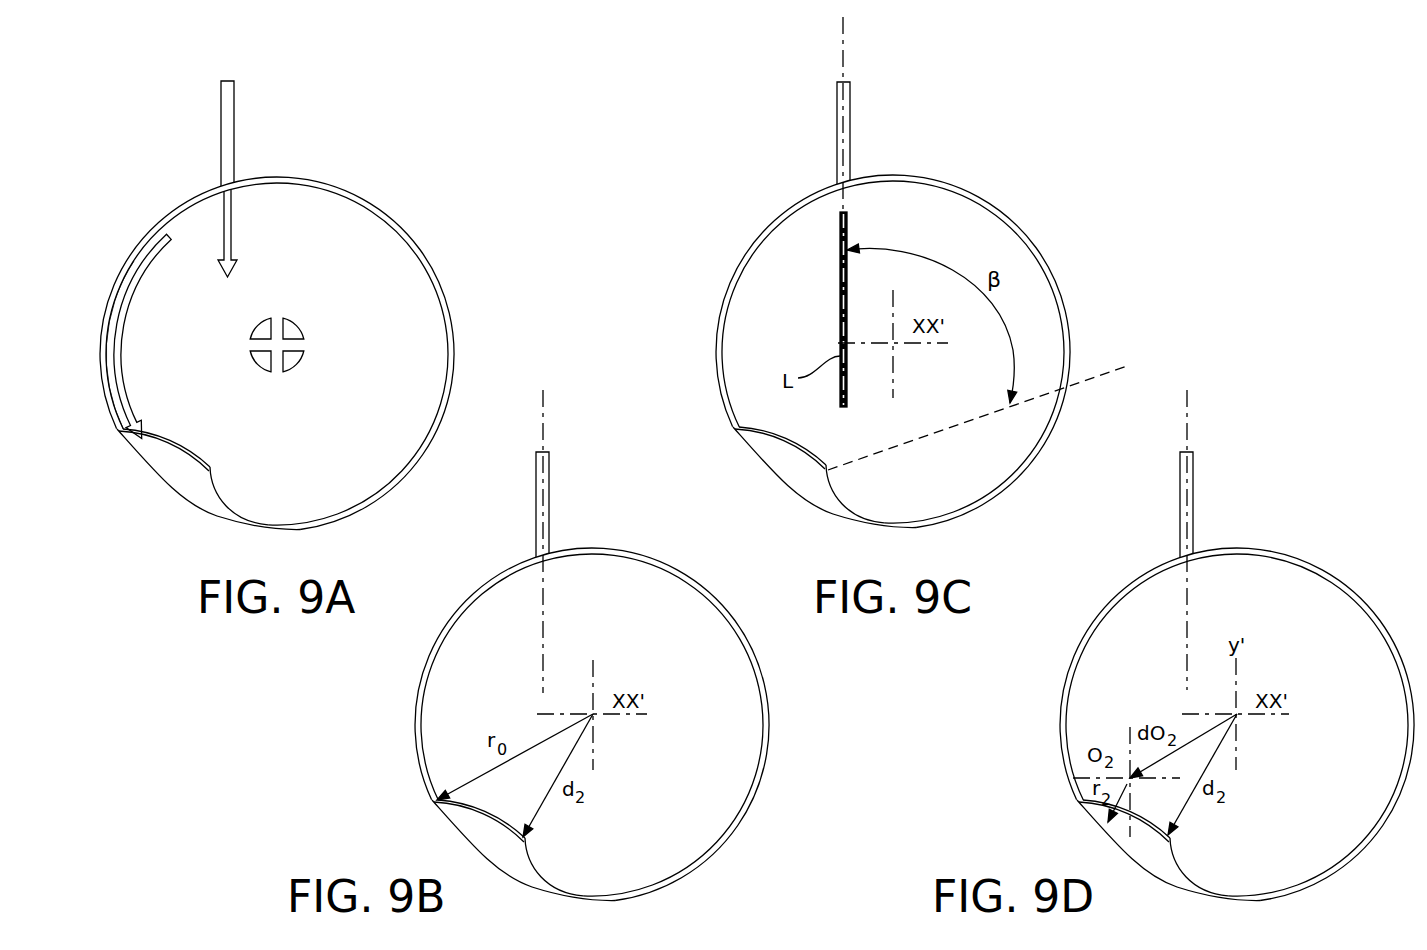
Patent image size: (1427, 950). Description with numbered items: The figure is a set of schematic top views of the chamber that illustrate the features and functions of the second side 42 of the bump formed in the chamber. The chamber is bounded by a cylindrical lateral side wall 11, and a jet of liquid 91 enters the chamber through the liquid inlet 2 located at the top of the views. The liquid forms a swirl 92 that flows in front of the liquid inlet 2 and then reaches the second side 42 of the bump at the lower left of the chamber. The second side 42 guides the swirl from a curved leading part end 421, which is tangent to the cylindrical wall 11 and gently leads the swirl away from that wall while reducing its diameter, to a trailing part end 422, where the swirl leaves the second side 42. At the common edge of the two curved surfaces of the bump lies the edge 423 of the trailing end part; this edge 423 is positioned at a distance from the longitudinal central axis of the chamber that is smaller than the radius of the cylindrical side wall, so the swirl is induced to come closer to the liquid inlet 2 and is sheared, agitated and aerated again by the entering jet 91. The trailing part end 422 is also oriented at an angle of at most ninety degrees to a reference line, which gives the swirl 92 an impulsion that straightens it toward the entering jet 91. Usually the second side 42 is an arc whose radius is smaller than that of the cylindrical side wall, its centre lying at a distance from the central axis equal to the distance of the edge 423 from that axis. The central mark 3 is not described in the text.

In FIG. 9A, the cylindrical lateral side wall 11 is at (247, 353).
In FIG. 9A, the stirring axis / center mark 3 is at (287, 316).
In FIG. 9A, the jet of liquid 91 is at (189, 179).
In FIG. 9A, the swirl 92 is at (118, 336).
In FIG. 9A, the second side 42 is at (193, 479).
In FIG. 9A, the leading part end 421 is at (163, 345).
In FIG. 9A, the trailing part end 422 is at (176, 450).
In FIG. 9A, the edge 423 is at (253, 496).
In FIG. 9B, the liquid inlet 2 is at (572, 504).